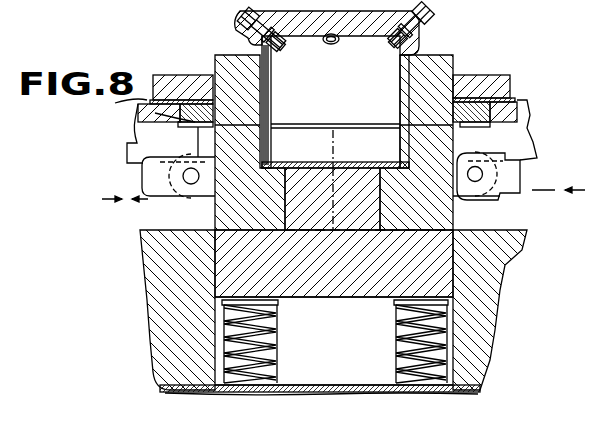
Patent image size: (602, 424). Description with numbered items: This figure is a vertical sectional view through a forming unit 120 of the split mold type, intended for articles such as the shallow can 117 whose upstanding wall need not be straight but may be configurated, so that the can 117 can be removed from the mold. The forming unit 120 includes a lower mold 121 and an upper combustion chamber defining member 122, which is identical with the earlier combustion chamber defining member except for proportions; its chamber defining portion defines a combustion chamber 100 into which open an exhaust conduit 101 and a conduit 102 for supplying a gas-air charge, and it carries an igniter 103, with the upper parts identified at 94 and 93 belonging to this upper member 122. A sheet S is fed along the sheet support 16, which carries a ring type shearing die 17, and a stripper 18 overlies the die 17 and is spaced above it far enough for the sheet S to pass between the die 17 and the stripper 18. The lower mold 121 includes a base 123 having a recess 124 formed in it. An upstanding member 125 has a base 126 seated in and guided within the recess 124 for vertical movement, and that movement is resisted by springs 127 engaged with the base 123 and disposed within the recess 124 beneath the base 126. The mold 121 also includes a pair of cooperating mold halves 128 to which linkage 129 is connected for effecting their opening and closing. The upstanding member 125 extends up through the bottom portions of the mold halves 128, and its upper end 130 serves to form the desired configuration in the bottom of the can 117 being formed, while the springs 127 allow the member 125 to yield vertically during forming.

The upper member 94 is at (144, 4).
The upper member 93 is at (305, 4).
The igniter 103 is at (240, 30).
The conduit 102 is at (422, 12).
The combustion chamber 100 is at (406, 38).
The exhaust conduit 101 is at (329, 46).
The upper combustion chamber defining member 122 is at (205, 57).
The sheet S is at (147, 99).
The shearing die 17 is at (137, 130).
The forming unit 120 is at (510, 68).
The stripper 18 is at (511, 79).
The sheet support 16 is at (533, 110).
The linkage 129 is at (142, 172).
The can 117 is at (268, 152).
The upper end 130 is at (337, 168).
The mold halves 128 is at (215, 205).
The upstanding member 125 is at (453, 209).
The lower mold 121 is at (503, 211).
The recess 124 is at (200, 266).
The base 126 is at (505, 270).
The base 123 is at (163, 306).
The springs 127 is at (278, 338).